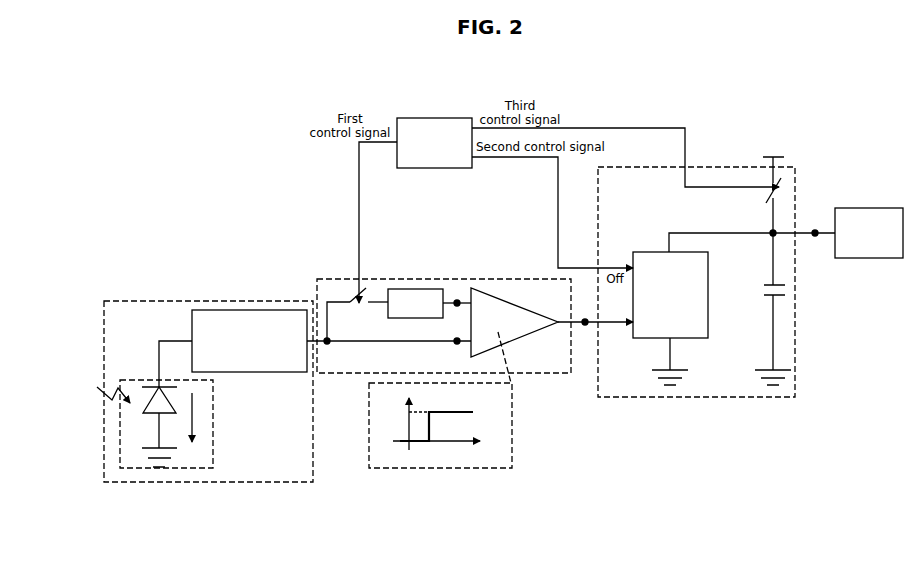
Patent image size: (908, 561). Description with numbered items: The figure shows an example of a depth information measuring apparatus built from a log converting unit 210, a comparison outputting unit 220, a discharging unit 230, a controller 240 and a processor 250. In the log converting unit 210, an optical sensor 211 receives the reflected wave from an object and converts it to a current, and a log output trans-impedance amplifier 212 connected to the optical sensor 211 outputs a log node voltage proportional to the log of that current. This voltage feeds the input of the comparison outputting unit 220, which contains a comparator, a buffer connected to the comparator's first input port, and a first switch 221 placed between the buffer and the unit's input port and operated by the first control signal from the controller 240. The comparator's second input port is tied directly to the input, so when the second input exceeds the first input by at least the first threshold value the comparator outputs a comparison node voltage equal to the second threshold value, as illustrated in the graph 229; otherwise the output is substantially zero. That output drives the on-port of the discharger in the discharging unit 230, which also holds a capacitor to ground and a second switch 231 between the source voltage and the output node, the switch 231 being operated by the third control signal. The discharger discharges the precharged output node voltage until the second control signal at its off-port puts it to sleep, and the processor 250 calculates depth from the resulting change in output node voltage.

The log converting unit 210 is at (207, 300).
The optical sensor 211 is at (213, 421).
The log output trans-impedance amplifier 212 is at (246, 310).
The comparison outputting unit 220 is at (420, 278).
The switch 221 is at (353, 301).
The graph 229 is at (443, 470).
The discharging unit 230 is at (697, 167).
The second switch 231 is at (763, 193).
The controller 240 is at (437, 118).
The processor 250 is at (868, 208).